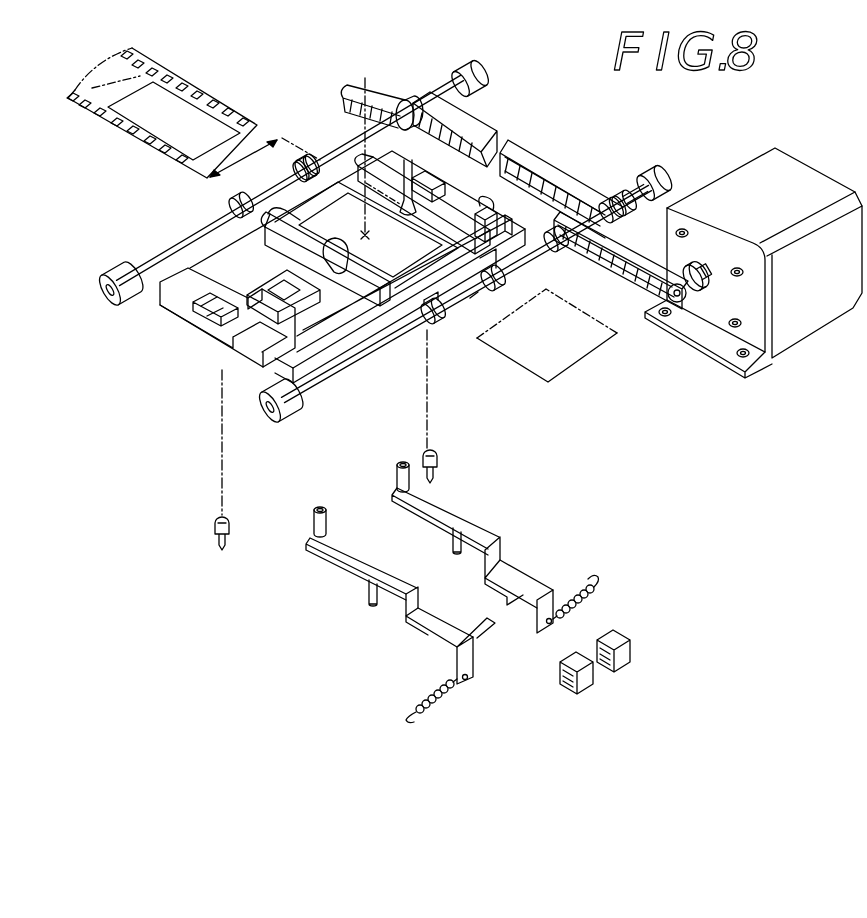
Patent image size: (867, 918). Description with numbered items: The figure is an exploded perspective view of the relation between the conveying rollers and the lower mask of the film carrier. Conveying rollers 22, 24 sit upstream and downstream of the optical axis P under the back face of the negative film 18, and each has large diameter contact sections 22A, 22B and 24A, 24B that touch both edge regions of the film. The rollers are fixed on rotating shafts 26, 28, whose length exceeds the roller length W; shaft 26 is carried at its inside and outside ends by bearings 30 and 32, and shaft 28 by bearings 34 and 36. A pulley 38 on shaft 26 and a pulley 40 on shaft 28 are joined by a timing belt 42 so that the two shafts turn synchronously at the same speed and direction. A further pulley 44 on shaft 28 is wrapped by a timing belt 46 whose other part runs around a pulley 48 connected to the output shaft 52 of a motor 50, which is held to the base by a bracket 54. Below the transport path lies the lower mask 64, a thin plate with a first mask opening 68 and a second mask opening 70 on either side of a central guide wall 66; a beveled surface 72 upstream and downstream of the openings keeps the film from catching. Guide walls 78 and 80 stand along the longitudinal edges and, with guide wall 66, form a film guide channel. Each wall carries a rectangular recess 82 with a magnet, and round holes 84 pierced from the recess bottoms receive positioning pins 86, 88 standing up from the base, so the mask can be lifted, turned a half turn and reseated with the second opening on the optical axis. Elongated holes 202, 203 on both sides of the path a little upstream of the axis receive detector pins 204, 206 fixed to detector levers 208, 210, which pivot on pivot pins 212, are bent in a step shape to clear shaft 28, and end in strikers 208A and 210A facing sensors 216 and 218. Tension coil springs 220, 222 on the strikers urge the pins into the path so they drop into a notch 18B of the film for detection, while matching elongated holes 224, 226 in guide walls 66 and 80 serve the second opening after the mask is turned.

The negative film 18 is at (176, 74).
The notch 18B is at (207, 98).
The length of conveying roller W is at (250, 137).
The conveying roller 22 is at (288, 182).
The large diameter contact section 22A is at (318, 158).
The large diameter contact section 22B is at (228, 200).
The conveying roller 24 is at (496, 282).
The large diameter contact section 24A is at (534, 297).
The large diameter contact section 24B is at (465, 300).
The rotating shaft 26 is at (168, 250).
The rotating shaft 28 is at (382, 345).
The bearing 30 is at (485, 72).
The bearing 32 is at (110, 273).
The bearing 34 is at (672, 172).
The bearing 36 is at (288, 400).
The pulley 38 is at (414, 100).
The pulley 40 is at (615, 192).
The timing belt 42 is at (560, 172).
The pulley 44 is at (558, 250).
The timing belt 46 is at (630, 262).
The pulley 48 is at (670, 318).
The motor 50 is at (775, 160).
The output shaft 52 is at (710, 262).
The bracket 54 is at (762, 306).
The lower mask 64 is at (428, 332).
The guide wall 66 is at (355, 265).
The first mask opening 68 is at (378, 216).
The second mask opening 70 is at (268, 284).
The beveled surface 72 is at (294, 178).
The guide wall 78 is at (495, 204).
The guide wall 80 is at (270, 360).
The rectangular recess 82 is at (195, 332).
The round hole 84 is at (222, 326).
The positioning pin 86 is at (440, 462).
The positioning pin 88 is at (232, 528).
The elongated hole 202 is at (410, 170).
The elongated hole 203 is at (240, 232).
The detector pin 204 is at (398, 472).
The detector pin 206 is at (327, 522).
The detector lever 208 is at (445, 505).
The striker 208A is at (540, 615).
The detector lever 210 is at (345, 555).
The striker 210A is at (480, 640).
The pivot pin 212 is at (452, 546).
The sensor 216 is at (632, 658).
The sensor 218 is at (595, 683).
The tension coil spring 220 is at (596, 583).
The tension coil spring 222 is at (424, 717).
The elongated hole 224 is at (320, 262).
The elongated hole 226 is at (235, 340).